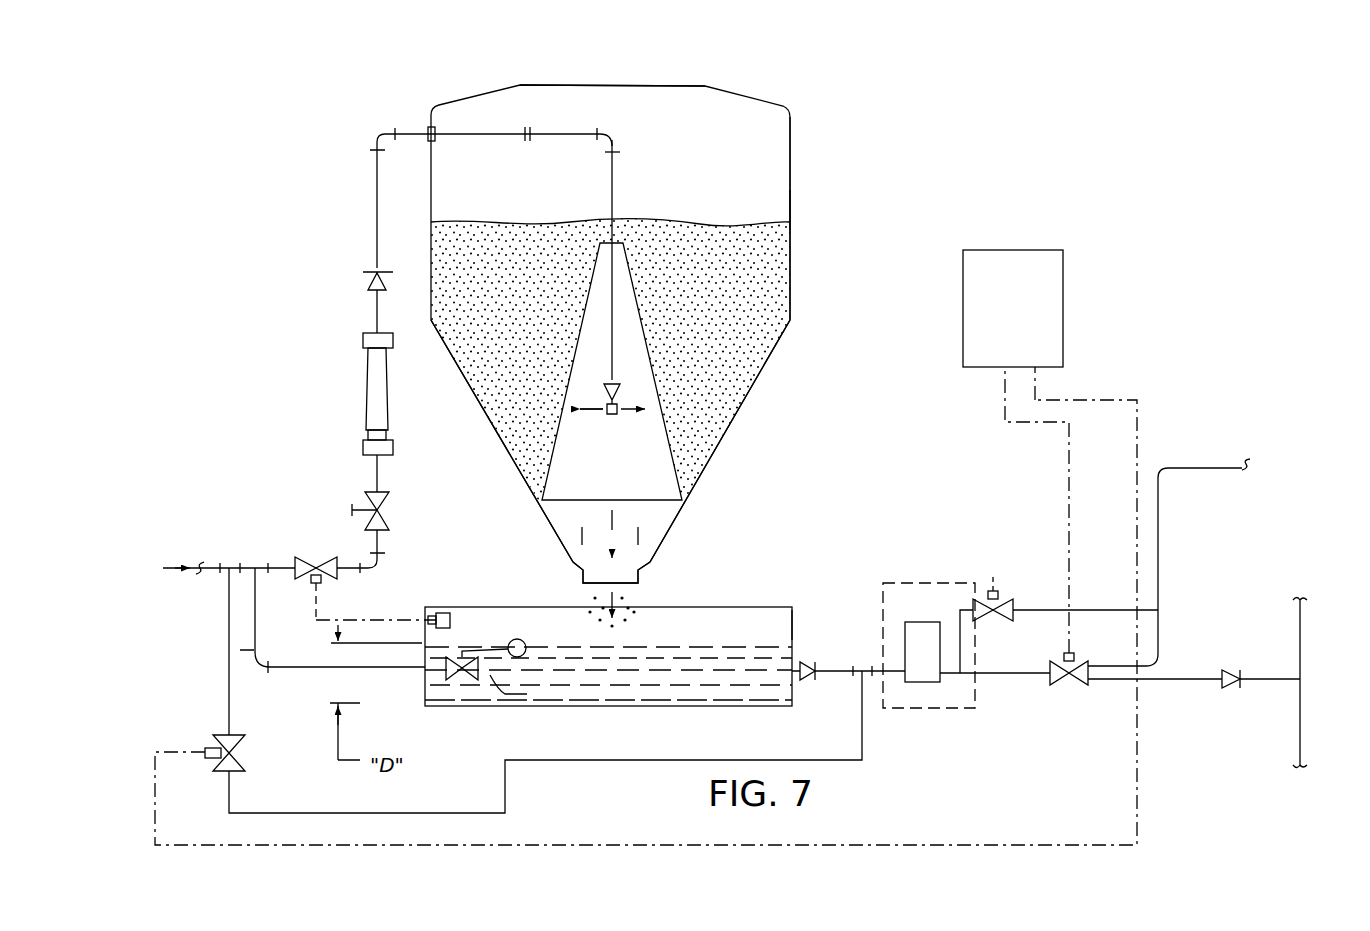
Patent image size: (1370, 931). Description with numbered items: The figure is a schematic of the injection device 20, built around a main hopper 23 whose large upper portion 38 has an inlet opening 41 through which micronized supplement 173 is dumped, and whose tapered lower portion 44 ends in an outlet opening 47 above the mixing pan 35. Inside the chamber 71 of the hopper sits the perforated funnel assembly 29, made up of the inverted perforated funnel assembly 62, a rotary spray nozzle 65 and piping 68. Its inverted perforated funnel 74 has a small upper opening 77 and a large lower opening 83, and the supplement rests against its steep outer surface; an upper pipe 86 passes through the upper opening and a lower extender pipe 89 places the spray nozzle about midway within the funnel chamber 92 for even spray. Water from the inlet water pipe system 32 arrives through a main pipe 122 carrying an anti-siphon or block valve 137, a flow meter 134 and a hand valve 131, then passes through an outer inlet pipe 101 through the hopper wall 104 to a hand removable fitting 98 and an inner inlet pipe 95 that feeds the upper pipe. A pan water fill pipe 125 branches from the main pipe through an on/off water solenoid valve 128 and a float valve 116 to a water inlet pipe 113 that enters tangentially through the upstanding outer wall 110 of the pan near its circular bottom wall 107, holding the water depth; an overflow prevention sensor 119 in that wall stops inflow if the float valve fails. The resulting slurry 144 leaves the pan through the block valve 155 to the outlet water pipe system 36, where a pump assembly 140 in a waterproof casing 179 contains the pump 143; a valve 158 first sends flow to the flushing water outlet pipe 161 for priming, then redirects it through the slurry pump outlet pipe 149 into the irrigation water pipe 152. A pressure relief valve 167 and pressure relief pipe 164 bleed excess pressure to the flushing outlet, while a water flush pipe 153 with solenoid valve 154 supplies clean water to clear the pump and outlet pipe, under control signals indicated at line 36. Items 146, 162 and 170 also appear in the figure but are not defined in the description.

The injection device 20 is at (799, 44).
The main hopper 23 is at (799, 180).
The perforated funnel assembly 29 is at (643, 235).
The inlet water pipe system 32 is at (314, 468).
The mixing pan 35 is at (747, 604).
The outlet water pipe system 36 is at (1048, 526).
The large upper portion 38 is at (797, 124).
The inlet opening 41 is at (706, 88).
The tapered lower portion 44 is at (708, 463).
The outlet opening 47 is at (640, 593).
The inverted perforated funnel assembly 62 is at (683, 402).
The rotary spray nozzle 65 is at (612, 416).
The piping 68 is at (619, 178).
The chamber 71 is at (461, 196).
The inverted perforated funnel 74 is at (543, 483).
The small upper opening 77 is at (614, 243).
The large lower opening 83 is at (573, 503).
The upper pipe 86 is at (611, 197).
The lower extender pipe 89 is at (612, 345).
The chamber 92 is at (654, 484).
The inner inlet pipe 95 is at (560, 135).
The hand removable fitting 98 is at (526, 142).
The outer inlet pipe 101 is at (470, 131).
The wall 104 is at (791, 205).
The circular bottom wall 107 is at (621, 709).
The upstanding outer wall 110 is at (793, 622).
The water inlet pipe 113 is at (509, 698).
The float valve 116 is at (442, 679).
The overflow prevention sensor 119 is at (462, 612).
The main pipe 122 is at (357, 548).
The pan water fill pipe 125 is at (301, 670).
The on/off water solenoid valve 128 is at (333, 580).
The hand valve 131 is at (390, 500).
The flow meter 134 is at (363, 384).
The anti-siphon or block valve 137 is at (366, 283).
The pump assembly 140 is at (1003, 536).
The pump 143 is at (925, 684).
The slurry 144 is at (752, 648).
The outlet pipe 146 is at (843, 690).
The slurry pump outlet pipe 149 is at (1022, 690).
The irrigation water pipe 152 is at (1300, 645).
The water flush pipe 153 is at (505, 800).
The solenoid valve 154 is at (221, 736).
The block valve 155 is at (818, 668).
The valve 158 is at (1084, 667).
The flushing water outlet pipe 161 is at (1160, 582).
The outlet check valve 162 is at (1236, 661).
The pressure relief pipe 164 is at (1072, 608).
The pressure relief valve 167 is at (1005, 603).
The controller 170 is at (1065, 275).
The micronized supplement 173 is at (704, 293).
The waterproof casing 179 is at (894, 580).